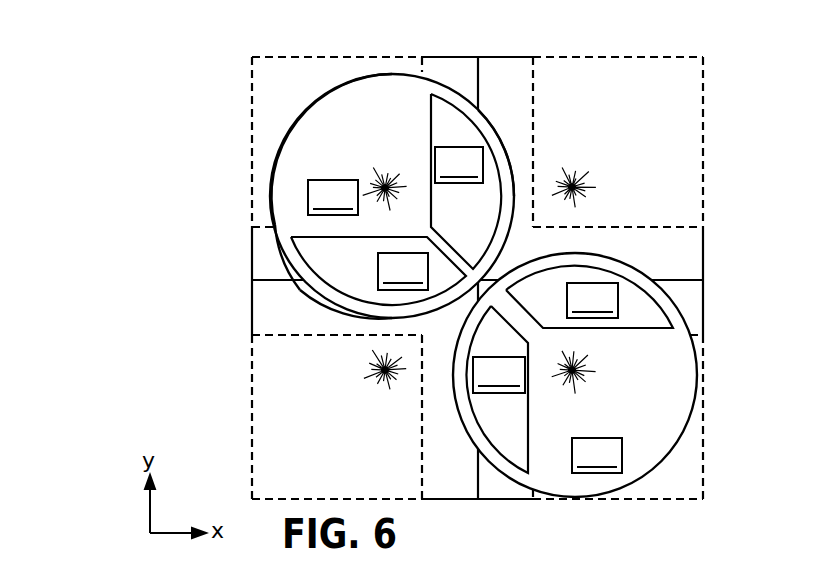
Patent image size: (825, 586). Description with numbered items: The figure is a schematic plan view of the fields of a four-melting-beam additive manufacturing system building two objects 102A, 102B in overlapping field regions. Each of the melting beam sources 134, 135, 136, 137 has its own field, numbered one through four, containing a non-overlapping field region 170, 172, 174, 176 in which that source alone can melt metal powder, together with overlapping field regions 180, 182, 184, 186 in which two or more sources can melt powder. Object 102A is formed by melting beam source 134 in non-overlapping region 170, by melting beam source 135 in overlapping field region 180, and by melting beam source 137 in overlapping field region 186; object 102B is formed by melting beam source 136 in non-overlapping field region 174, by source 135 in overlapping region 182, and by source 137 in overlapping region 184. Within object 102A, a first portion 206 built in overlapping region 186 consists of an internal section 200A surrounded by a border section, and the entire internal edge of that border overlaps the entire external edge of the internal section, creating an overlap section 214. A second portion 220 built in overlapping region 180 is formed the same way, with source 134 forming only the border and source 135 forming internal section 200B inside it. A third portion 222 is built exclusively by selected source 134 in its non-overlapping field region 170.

The object 102A is at (263, 240).
The object 102B is at (708, 437).
The melting beam source 134 is at (370, 175).
The melting beam source 135 is at (577, 172).
The melting beam source 136 is at (583, 364).
The melting beam source 137 is at (380, 392).
The non-overlapping field region 170 is at (272, 122).
The non-overlapping field region 172 is at (677, 133).
The non-overlapping field region 174 is at (645, 488).
The non-overlapping field region 176 is at (270, 432).
The overlapping field region 180 is at (519, 44).
The overlapping field region 182 is at (714, 261).
The overlapping field region 184 is at (498, 512).
The overlapping field region 186 is at (236, 318).
The internal section 200A is at (353, 285).
The internal section 200B is at (478, 213).
The first portion 206 is at (293, 288).
The overlap section 214 is at (283, 211).
The second portion 220 is at (495, 150).
The third portion 222 is at (337, 107).